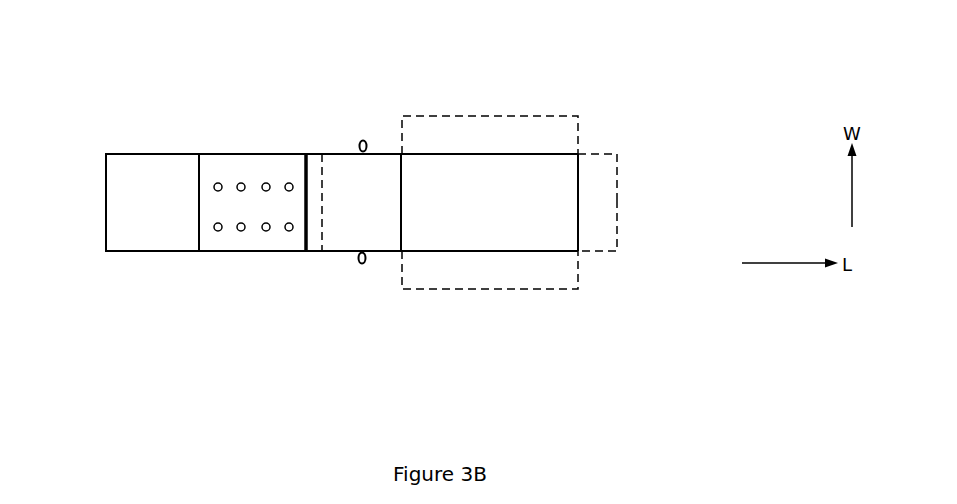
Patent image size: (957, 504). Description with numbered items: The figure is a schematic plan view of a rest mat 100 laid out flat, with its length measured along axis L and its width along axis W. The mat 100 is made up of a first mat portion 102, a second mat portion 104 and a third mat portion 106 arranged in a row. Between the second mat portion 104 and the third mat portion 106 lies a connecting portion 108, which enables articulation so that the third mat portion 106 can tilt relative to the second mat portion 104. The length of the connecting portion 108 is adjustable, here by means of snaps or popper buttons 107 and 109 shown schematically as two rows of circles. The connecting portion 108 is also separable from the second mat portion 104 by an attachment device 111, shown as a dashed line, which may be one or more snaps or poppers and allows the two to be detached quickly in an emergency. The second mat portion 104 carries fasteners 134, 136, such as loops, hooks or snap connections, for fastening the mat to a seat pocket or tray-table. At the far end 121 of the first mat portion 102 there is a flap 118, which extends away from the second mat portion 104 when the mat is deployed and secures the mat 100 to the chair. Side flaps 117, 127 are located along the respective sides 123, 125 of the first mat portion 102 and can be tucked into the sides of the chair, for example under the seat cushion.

The mat 100 is at (441, 87).
The first mat portion 102 is at (452, 180).
The second mat portion 104 is at (355, 173).
The third mat portion 106 is at (129, 242).
The snaps or popper buttons 107 is at (252, 236).
The connecting portion 108 is at (276, 243).
The snaps or popper buttons 109 is at (255, 174).
The attachment device 111 is at (322, 232).
The side flap 117 is at (567, 132).
The flap 118 is at (602, 243).
The end of first mat portion 121 is at (578, 189).
The side of first mat portion 123 is at (522, 153).
The side of first mat portion 125 is at (495, 252).
The side flap 127 is at (510, 278).
The fastener 134 is at (365, 263).
The fastener 136 is at (363, 141).